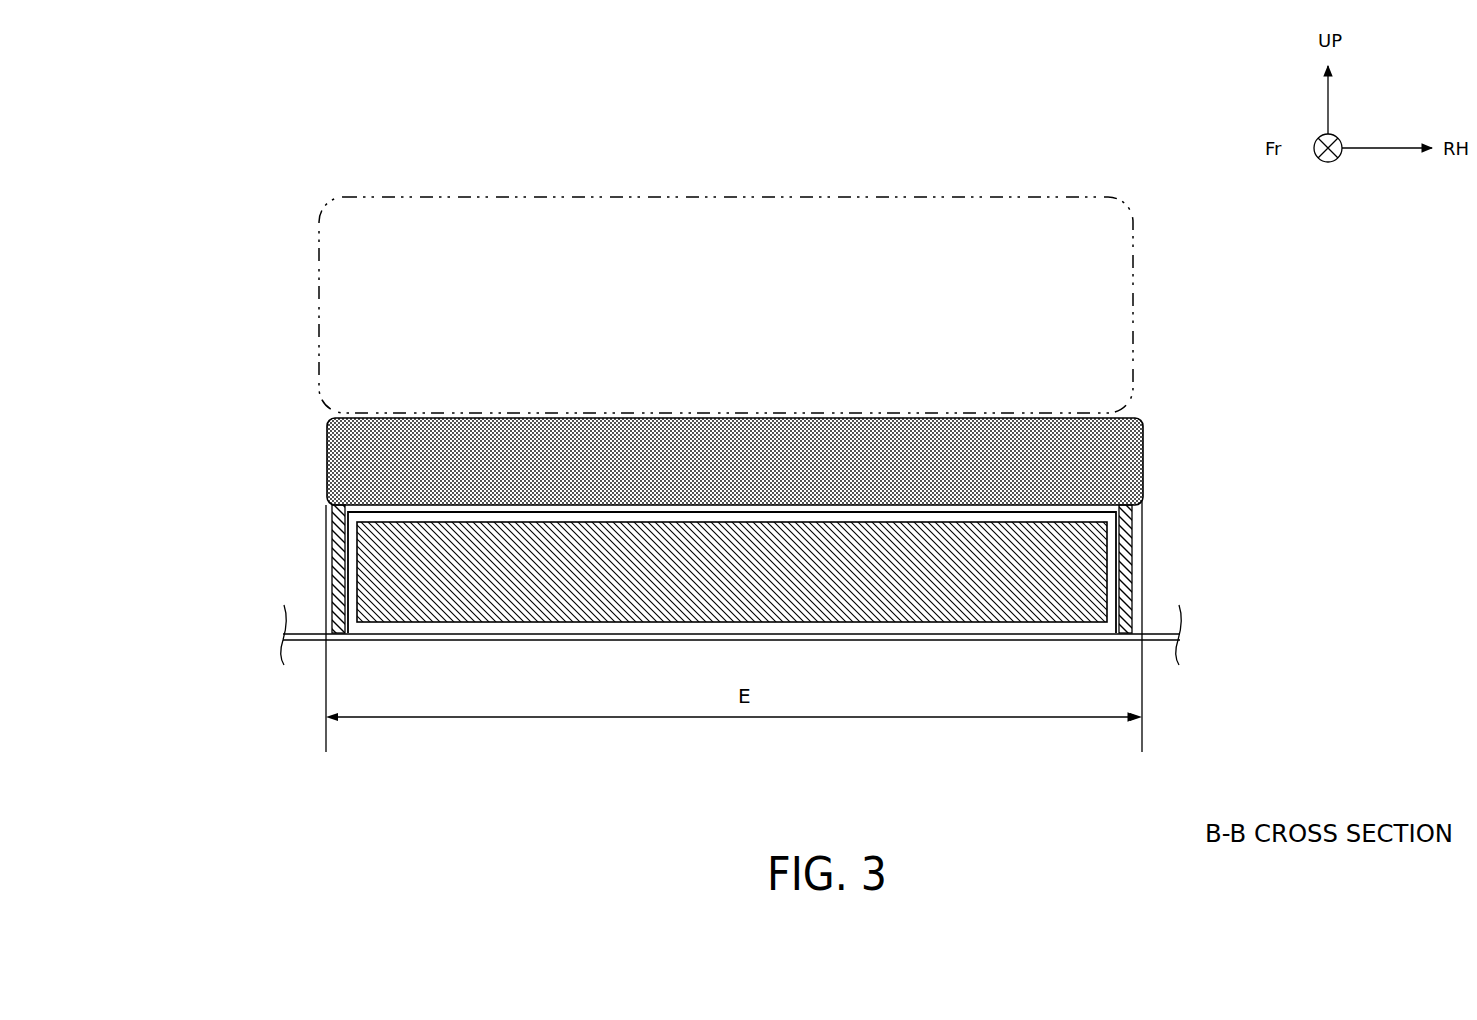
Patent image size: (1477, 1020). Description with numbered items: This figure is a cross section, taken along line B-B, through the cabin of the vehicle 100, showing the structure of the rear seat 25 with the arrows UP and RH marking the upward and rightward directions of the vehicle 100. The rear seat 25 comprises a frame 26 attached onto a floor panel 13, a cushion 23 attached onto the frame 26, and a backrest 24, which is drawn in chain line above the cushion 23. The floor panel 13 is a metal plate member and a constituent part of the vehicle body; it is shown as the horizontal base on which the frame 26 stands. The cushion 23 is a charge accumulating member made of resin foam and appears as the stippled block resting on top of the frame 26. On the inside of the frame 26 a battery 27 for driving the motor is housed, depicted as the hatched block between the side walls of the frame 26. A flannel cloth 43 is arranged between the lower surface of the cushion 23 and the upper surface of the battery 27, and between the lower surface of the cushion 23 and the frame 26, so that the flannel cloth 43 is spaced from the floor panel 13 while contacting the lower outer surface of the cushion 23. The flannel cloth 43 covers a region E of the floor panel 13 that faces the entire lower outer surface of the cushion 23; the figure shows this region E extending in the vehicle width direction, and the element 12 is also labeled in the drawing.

The vehicle 100 is at (195, 256).
The seat cushion 12 is at (691, 166).
The floor panel 13 is at (317, 632).
The cushion 23 is at (1143, 457).
The backrest 24 is at (1135, 352).
The rear seat 25 is at (1290, 318).
The frame 26 is at (1130, 565).
The battery 27 is at (1055, 622).
The flannel cloth 43 is at (1120, 527).